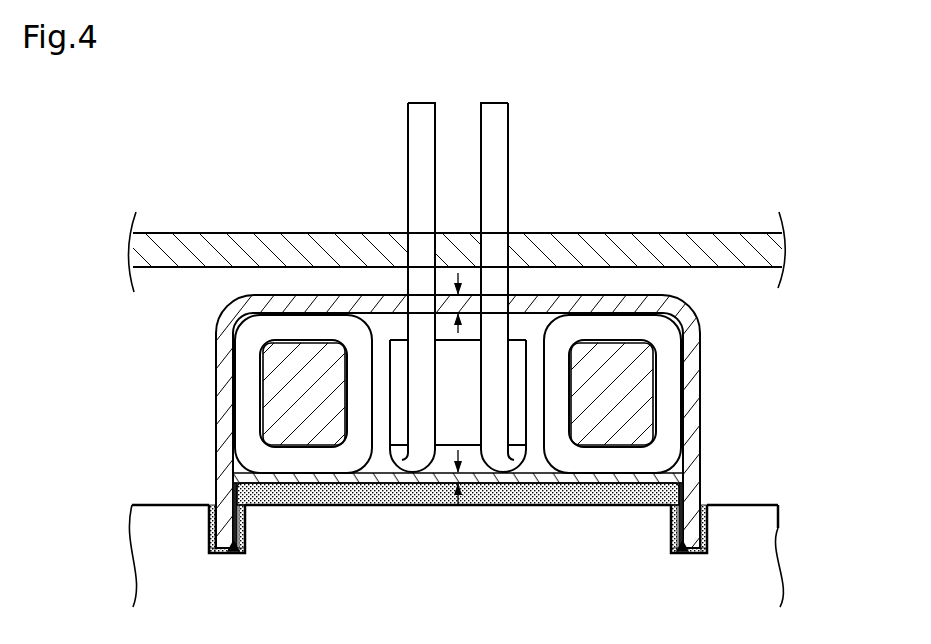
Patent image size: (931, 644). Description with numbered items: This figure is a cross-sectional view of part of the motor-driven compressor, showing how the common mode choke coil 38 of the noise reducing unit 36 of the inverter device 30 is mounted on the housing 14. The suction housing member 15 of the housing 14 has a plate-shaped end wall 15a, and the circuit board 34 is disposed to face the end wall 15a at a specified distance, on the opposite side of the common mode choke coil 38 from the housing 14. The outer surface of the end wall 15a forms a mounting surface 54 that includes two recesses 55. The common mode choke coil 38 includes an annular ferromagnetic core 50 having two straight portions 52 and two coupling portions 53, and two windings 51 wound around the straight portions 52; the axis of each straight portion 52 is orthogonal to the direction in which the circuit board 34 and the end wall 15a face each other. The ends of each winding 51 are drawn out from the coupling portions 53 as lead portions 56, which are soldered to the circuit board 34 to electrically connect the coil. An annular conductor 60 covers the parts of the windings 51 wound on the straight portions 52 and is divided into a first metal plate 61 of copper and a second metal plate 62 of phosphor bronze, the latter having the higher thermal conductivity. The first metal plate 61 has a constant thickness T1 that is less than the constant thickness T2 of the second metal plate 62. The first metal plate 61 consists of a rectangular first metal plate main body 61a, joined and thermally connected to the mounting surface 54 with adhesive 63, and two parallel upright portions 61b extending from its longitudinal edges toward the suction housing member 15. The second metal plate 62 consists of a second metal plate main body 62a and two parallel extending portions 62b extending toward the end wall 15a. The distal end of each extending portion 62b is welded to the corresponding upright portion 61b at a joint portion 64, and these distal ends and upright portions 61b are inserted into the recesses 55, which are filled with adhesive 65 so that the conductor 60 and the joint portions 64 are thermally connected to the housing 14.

The housing 14 is at (136, 503).
The suction housing member 15 is at (779, 501).
The end wall 15a is at (773, 530).
The inverter device 30 is at (162, 200).
The circuit board 34 is at (697, 233).
The noise reducing unit 36 is at (764, 355).
The common mode choke coil 38 is at (209, 322).
The core 50 is at (662, 334).
The windings 51 is at (247, 360).
The straight portions 52 is at (272, 399).
The coupling portions 53 is at (448, 387).
The mounting surface 54 is at (762, 505).
The recesses 55 is at (220, 506).
The lead portions 56 is at (507, 103).
The conductor 60 is at (242, 303).
The first metal plate 61 is at (582, 478).
The first metal plate main body 61a is at (352, 504).
The upright portions 61b is at (238, 518).
The second metal plate 62 is at (623, 294).
The second metal plate main body 62a is at (363, 304).
The extending portions 62b is at (222, 382).
The adhesive 63 is at (522, 500).
The joint portions 64 is at (231, 552).
The adhesive 65 is at (208, 548).
The thickness of first metal plate T1 is at (465, 484).
The thickness of second metal plate T2 is at (461, 304).